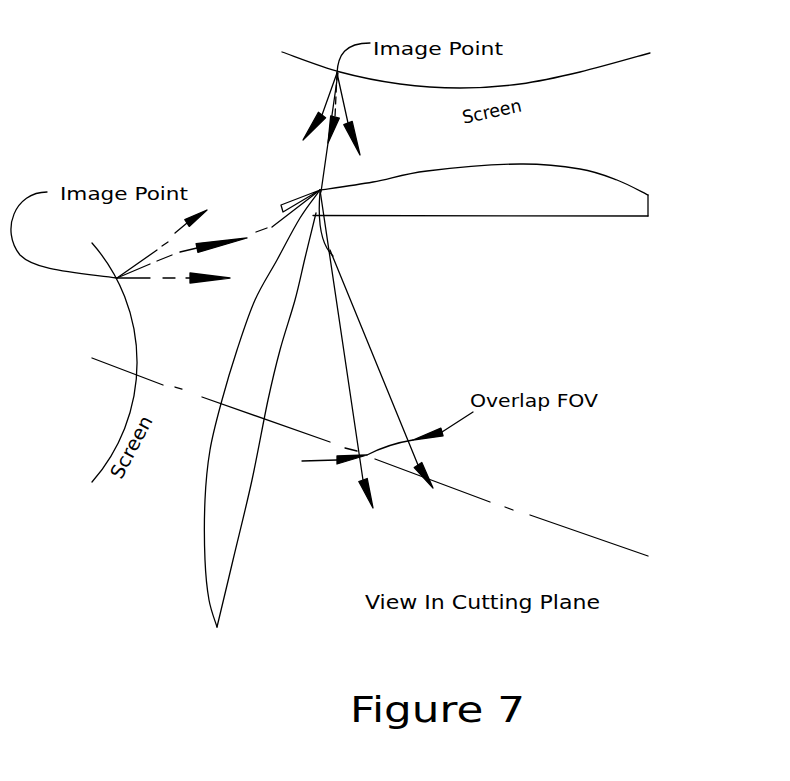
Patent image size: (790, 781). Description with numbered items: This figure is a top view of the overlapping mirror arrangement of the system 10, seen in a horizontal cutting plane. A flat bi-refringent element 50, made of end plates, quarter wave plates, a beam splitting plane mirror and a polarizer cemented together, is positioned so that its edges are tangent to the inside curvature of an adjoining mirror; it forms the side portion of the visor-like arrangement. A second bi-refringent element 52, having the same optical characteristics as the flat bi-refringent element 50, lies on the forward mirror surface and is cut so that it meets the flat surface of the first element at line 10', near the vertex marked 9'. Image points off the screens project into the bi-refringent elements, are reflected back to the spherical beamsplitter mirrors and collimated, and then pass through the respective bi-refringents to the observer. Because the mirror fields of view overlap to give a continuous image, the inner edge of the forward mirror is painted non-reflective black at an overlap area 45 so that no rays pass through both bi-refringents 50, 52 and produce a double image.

The system 10 is at (406, 366).
The second bi-refringent element 52 is at (630, 217).
The flat bi-refringent element 50 is at (235, 558).
The overlap area 45 is at (290, 213).
The image point 9' is at (310, 177).
The line 10' is at (359, 232).